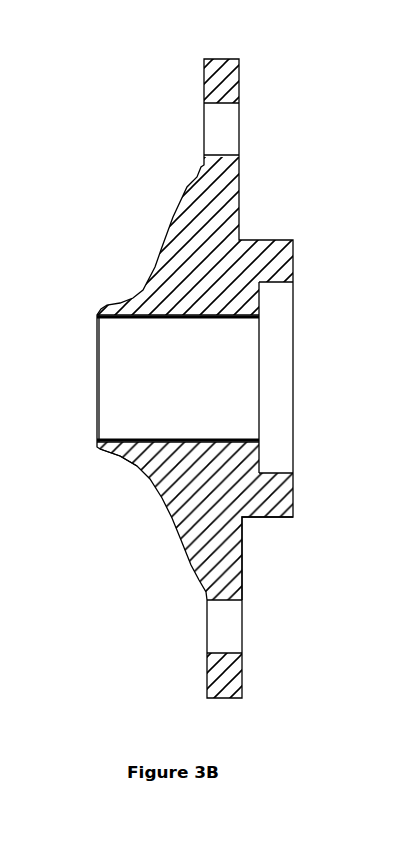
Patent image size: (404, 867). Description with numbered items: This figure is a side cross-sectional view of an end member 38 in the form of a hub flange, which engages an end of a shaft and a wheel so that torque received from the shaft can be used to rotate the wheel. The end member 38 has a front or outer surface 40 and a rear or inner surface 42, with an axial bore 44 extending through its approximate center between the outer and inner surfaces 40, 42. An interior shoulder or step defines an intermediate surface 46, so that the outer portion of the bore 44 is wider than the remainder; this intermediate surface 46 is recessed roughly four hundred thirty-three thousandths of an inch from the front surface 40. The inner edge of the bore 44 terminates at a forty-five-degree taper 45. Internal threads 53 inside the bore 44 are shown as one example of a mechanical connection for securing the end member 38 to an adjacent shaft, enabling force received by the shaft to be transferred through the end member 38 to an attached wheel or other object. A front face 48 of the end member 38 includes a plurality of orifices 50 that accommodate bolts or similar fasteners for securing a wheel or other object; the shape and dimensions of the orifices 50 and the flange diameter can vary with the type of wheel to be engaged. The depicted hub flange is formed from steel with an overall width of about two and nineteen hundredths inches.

The end member 38 is at (297, 160).
The outer surface 40 is at (292, 260).
The inner surface 42 is at (97, 450).
The axial bore 44 is at (123, 378).
The 45-degree taper 45 is at (97, 447).
The intermediate surface 46 is at (260, 453).
The front face 48 is at (243, 555).
The orifices 50 is at (216, 135).
The internal threads 53 is at (150, 316).